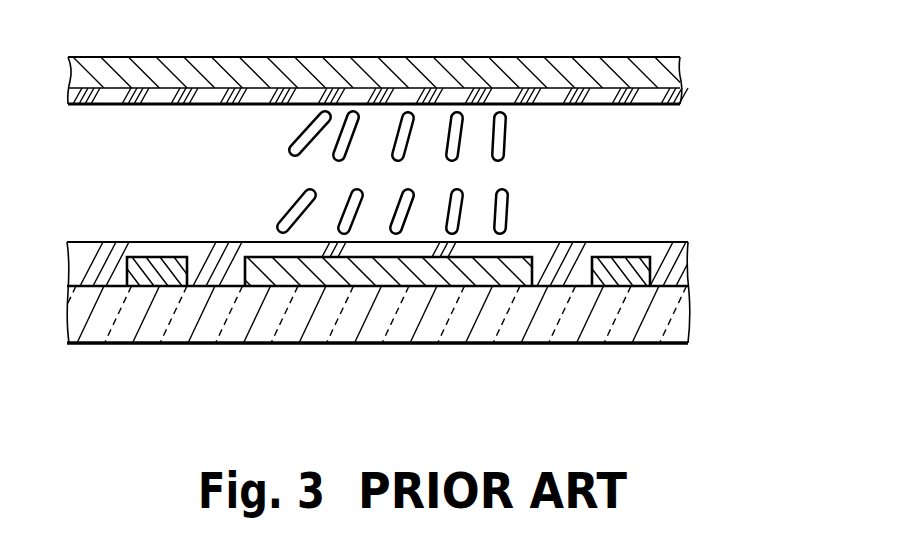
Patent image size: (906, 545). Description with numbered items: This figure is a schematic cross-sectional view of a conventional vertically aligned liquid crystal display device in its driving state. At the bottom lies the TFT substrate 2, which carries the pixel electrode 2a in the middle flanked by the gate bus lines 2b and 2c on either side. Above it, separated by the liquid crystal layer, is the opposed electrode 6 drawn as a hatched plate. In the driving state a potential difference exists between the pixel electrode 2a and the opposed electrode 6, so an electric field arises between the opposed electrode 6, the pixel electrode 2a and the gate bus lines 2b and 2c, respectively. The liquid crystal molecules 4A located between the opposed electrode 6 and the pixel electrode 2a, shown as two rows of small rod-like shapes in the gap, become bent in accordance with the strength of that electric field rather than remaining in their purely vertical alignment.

The opposed electrode 6 is at (681, 72).
The liquid crystal molecules 4A is at (509, 209).
The TFT substrate 2 is at (690, 313).
The gate bus line 2b is at (157, 277).
The pixel electrode 2a is at (483, 275).
The gate bus line 2c is at (622, 277).